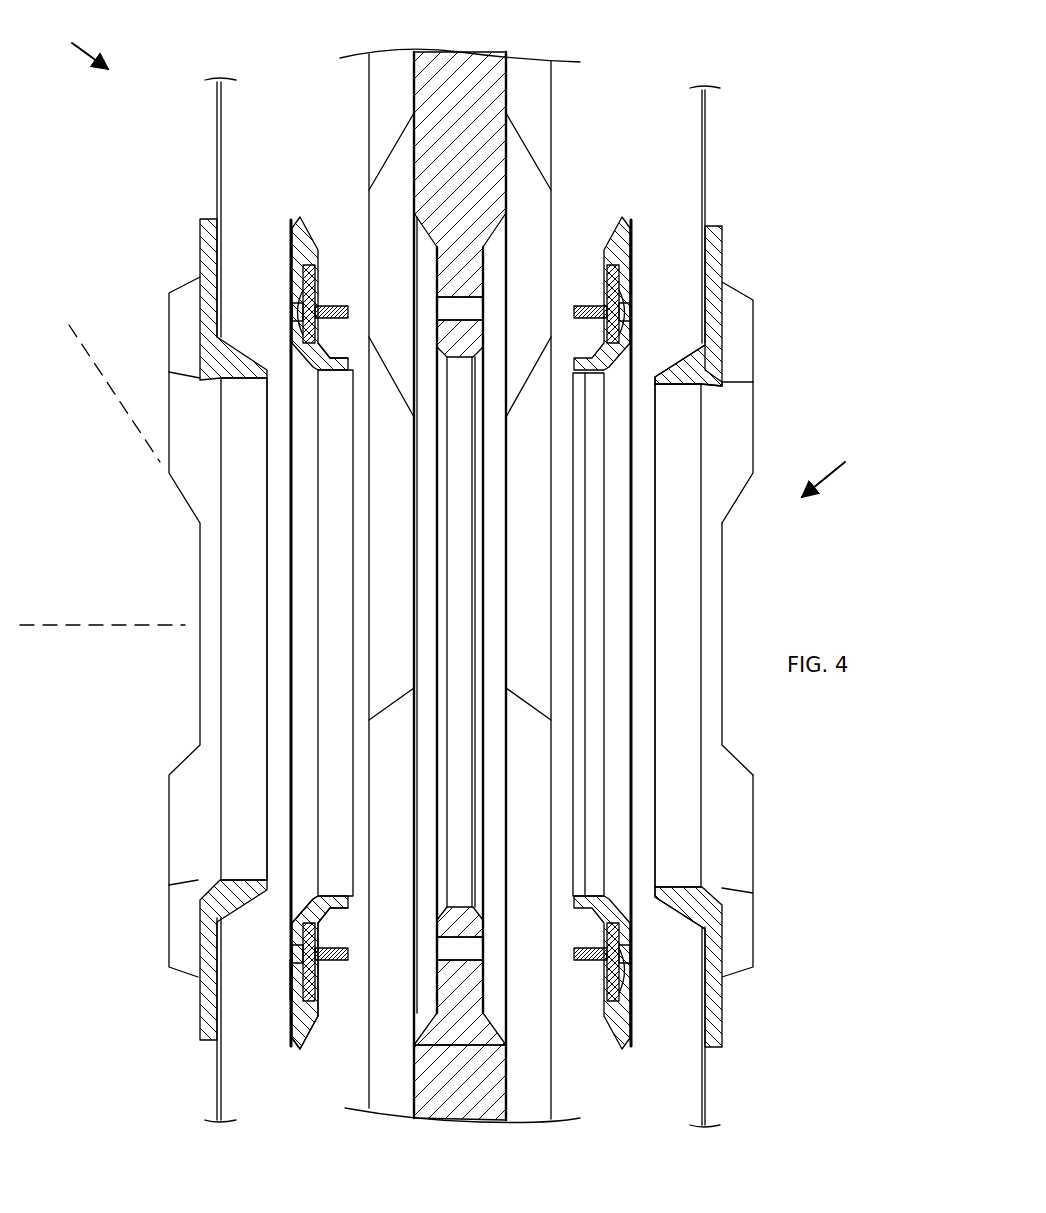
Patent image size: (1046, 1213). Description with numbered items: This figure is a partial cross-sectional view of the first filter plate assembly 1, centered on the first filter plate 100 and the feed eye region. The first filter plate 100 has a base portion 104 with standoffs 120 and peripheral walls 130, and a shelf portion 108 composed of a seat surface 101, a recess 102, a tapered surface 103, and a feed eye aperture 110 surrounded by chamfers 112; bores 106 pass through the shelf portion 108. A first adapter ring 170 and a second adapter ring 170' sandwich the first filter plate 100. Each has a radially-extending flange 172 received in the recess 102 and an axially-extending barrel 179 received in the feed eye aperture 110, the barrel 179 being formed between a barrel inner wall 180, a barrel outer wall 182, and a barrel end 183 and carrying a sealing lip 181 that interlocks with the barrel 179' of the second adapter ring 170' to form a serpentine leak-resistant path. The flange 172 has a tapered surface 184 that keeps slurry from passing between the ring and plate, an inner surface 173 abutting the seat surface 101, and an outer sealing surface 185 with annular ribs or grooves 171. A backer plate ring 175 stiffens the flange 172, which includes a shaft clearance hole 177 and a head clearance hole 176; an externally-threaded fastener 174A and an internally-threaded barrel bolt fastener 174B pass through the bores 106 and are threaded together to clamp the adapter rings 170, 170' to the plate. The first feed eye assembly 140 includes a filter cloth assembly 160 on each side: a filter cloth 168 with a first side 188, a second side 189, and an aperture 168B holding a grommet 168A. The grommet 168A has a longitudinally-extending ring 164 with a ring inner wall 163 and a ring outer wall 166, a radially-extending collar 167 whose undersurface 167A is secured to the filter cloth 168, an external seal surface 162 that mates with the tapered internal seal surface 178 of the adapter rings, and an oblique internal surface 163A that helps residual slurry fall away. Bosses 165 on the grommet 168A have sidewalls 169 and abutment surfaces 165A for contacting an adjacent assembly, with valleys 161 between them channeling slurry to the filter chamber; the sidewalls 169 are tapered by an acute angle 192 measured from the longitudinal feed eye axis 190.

The first filter plate assembly 1 is at (83, 47).
The first filter plate 100 is at (479, 162).
The seat surface 101 is at (437, 980).
The recess 102 is at (494, 264).
The tapered surface 103 is at (490, 1032).
The base portion 104 is at (460, 81).
The bore 106 is at (462, 958).
The shelf portion 108 is at (465, 342).
The feed eye aperture 110 is at (465, 580).
The chamfers 112 is at (476, 530).
The standoffs 120 is at (530, 193).
The peripheral walls 130 is at (537, 100).
The first feed eye assembly 140 is at (845, 469).
The filter cloth assembly 160 is at (196, 1070).
The valleys 161 is at (726, 572).
The external seal surface 162 is at (690, 365).
The ring inner wall 163 is at (670, 885).
The oblique internal surface 163A is at (715, 820).
The longitudinally-extending ring 164 is at (667, 384).
The bosses 165 is at (742, 455).
The abutment surface 165A is at (754, 400).
The ring outer wall 166 is at (660, 897).
The radially-extending collar 167 is at (713, 268).
The undersurface 167A is at (218, 284).
The filter cloth 168 is at (705, 152).
The grommet 168A is at (218, 362).
The aperture 168B is at (205, 912).
The sidewall 169 is at (752, 760).
The first adapter ring 170 is at (290, 696).
The second adapter ring 170' is at (609, 677).
The annular ribs or grooves 171 is at (298, 1003).
The radially-extending flange 172 is at (302, 1012).
The inner surface 173 is at (320, 992).
The externally-threaded fastener 174A is at (312, 951).
The internally-threaded barrel bolt fastener 174B is at (587, 308).
The backer plate ring 175 is at (308, 290).
The head clearance hole 176 is at (300, 928).
The shaft clearance hole 177 is at (316, 950).
The internal seal surface 178 is at (303, 810).
The axially-extending barrel 179 is at (336, 633).
The barrel 179' is at (556, 639).
The barrel inner wall 180 is at (338, 888).
The lip 181 is at (336, 358).
The barrel outer wall 182 is at (338, 352).
The barrel end 183 is at (343, 890).
The tapered surface 184 is at (303, 1016).
The outer sealing surface 185 is at (292, 985).
The first side 188 is at (216, 127).
The second side 189 is at (218, 143).
The longitudinal feed eye axis 190 is at (130, 625).
The acute angle 192 is at (128, 417).